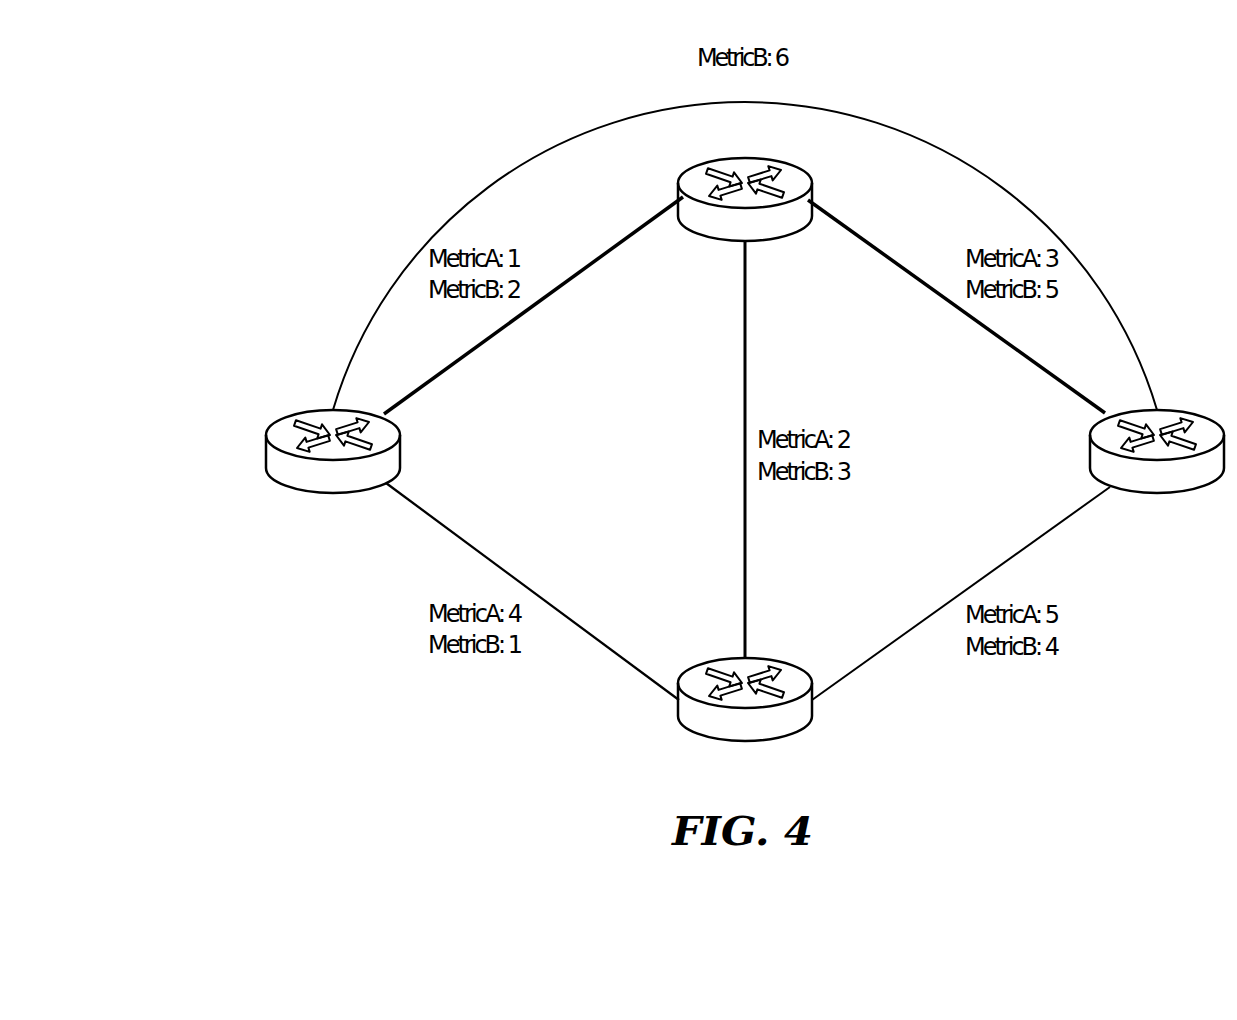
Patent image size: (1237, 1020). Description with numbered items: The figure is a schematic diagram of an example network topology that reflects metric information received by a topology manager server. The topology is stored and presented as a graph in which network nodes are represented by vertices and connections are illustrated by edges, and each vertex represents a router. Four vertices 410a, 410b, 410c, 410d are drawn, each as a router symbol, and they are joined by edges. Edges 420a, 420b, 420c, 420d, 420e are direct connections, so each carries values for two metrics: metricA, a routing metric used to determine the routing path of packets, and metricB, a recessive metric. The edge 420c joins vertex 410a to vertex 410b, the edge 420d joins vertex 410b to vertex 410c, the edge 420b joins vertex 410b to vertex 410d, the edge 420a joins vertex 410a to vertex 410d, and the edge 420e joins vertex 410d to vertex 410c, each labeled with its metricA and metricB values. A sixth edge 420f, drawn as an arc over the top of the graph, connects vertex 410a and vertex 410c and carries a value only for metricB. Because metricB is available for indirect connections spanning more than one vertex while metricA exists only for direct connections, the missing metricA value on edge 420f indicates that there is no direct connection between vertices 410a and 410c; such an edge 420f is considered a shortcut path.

The vertex 410a is at (272, 452).
The vertex 410b is at (712, 164).
The vertex 410c is at (1095, 452).
The vertex 410d is at (712, 664).
The edge 420a is at (495, 568).
The edge 420b is at (745, 349).
The edge 420c is at (606, 252).
The edge 420d is at (921, 281).
The edge 420e is at (990, 572).
The edge 420f is at (542, 136).